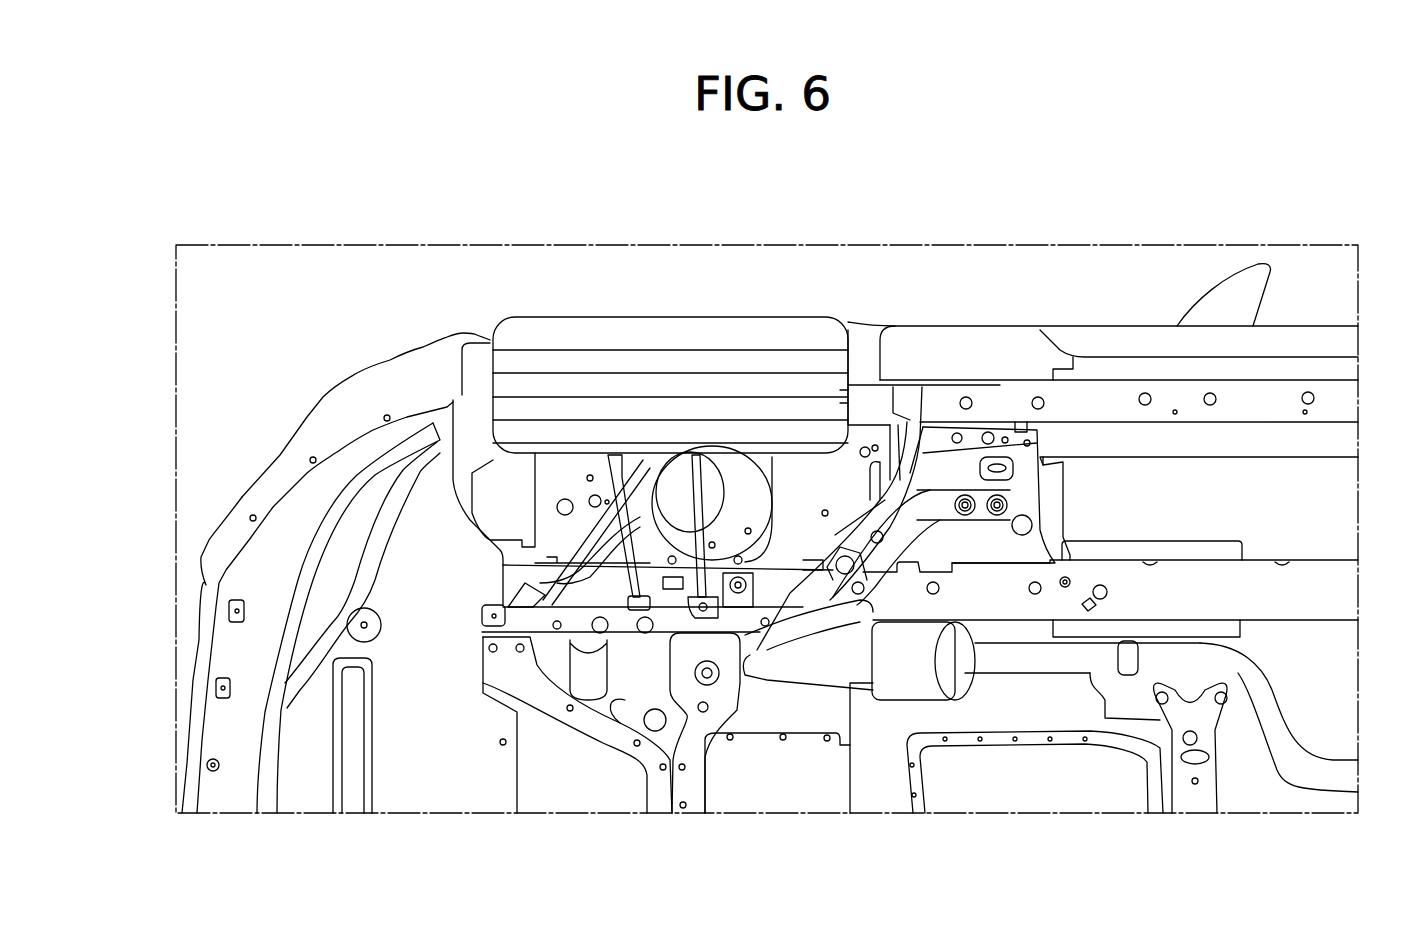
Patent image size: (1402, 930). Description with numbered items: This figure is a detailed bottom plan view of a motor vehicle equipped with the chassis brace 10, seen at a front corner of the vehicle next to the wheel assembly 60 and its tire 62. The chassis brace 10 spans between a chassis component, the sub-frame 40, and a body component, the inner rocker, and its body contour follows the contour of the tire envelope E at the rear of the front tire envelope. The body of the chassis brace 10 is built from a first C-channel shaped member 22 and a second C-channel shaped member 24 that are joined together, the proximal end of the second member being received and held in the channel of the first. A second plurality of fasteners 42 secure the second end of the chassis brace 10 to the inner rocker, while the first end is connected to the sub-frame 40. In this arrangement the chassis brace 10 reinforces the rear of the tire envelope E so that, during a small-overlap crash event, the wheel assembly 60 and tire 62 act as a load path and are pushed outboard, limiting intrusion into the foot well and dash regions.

The wheel assembly 60 is at (825, 295).
The tire 62 is at (590, 360).
The chassis brace 10 is at (843, 475).
The first C-channel shaped member 22 is at (890, 468).
The second C-channel shaped member 24 is at (960, 437).
The second plurality of fasteners 42 is at (1003, 432).
The sub-frame 40 is at (803, 603).
The tire envelope E is at (797, 513).